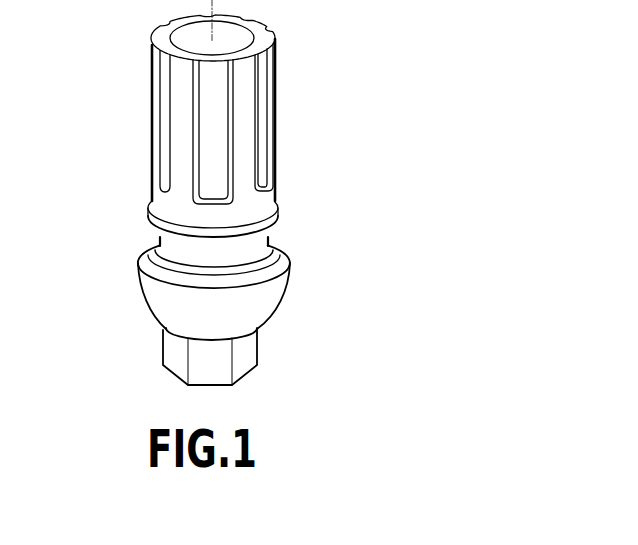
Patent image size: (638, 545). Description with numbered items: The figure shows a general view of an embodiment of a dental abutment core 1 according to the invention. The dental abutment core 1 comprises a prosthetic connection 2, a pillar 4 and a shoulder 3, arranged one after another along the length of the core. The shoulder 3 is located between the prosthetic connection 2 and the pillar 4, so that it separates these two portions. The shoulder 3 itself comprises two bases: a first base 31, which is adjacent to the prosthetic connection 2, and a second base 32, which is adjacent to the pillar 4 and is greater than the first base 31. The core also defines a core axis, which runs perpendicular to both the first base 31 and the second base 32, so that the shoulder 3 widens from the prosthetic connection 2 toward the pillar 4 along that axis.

The dental abutment core 1 is at (74, 301).
The prosthetic connection 2 is at (163, 350).
The shoulder 3 is at (283, 288).
The first base 31 is at (268, 328).
The second base 32 is at (285, 253).
The pillar 4 is at (297, 162).